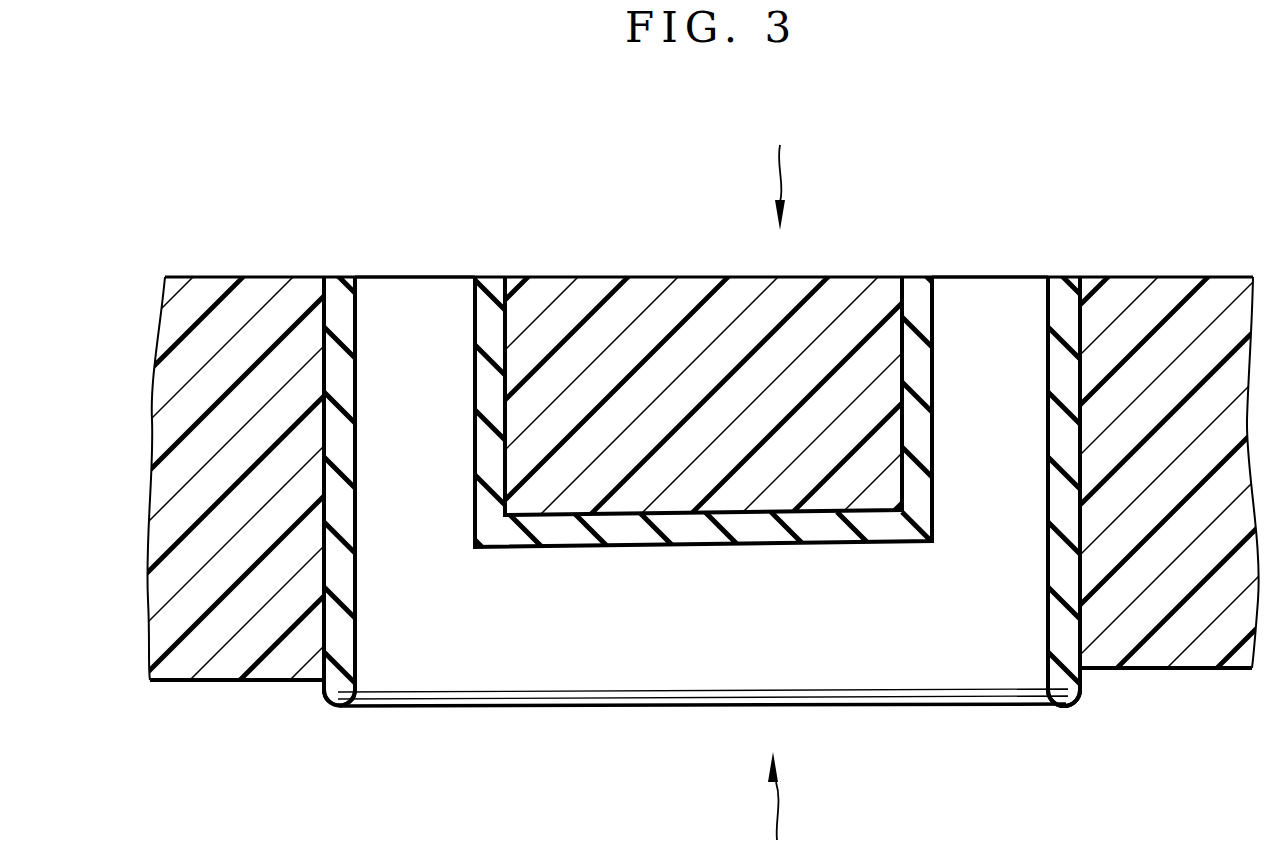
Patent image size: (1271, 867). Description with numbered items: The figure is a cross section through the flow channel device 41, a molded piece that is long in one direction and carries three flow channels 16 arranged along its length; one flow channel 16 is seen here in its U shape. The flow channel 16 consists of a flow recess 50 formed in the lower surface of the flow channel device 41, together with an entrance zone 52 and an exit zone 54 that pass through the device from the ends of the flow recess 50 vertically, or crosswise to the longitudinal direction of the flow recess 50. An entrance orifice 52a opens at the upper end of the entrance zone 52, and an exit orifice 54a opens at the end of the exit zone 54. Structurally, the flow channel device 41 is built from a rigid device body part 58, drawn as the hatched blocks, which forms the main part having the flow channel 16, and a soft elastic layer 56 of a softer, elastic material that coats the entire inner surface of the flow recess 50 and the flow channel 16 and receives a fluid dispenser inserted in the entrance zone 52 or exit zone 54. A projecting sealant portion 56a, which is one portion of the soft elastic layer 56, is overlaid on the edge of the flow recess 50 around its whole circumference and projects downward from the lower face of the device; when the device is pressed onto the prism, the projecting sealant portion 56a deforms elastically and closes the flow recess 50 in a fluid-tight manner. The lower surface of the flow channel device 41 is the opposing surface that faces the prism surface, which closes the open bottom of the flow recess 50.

The flow channel 16 is at (776, 809).
The flow channel device 41 is at (779, 169).
The flow recess 50 is at (733, 642).
The entrance zone 52 is at (358, 383).
The entrance orifice 52a is at (473, 303).
The exit zone 54 is at (1048, 366).
The exit orifice 54a is at (932, 305).
The soft elastic layer 56 is at (352, 597).
The projecting sealant portion 56a is at (345, 704).
The device body part 58 is at (642, 295).